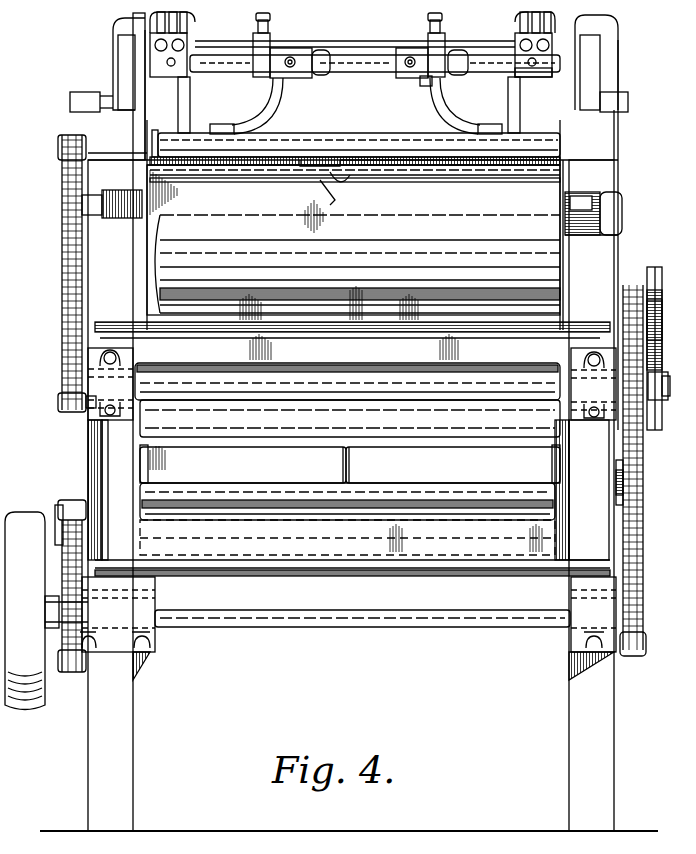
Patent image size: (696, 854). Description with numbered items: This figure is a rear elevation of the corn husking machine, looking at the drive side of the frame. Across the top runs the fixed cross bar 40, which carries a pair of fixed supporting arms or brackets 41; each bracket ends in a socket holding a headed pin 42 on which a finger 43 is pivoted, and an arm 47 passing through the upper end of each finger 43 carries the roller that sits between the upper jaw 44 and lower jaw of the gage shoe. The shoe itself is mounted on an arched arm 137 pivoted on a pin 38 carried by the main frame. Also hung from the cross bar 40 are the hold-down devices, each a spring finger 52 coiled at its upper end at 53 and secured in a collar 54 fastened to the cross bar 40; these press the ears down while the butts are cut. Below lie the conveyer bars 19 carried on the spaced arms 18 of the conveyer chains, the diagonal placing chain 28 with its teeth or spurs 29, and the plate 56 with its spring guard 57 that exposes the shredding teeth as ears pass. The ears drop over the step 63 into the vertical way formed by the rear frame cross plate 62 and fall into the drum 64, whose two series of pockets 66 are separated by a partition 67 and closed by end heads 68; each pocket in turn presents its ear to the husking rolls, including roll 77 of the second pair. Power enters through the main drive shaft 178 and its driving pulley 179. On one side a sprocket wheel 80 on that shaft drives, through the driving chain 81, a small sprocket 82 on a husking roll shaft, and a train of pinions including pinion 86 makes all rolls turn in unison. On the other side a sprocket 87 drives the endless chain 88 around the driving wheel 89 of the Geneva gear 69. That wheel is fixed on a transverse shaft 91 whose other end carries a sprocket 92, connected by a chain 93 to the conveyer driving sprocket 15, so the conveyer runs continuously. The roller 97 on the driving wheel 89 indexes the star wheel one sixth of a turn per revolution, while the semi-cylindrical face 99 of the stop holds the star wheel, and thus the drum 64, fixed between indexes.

The driving sprocket 15 is at (72, 136).
The spaced arms 18 is at (170, 166).
The cross rods or bars 19 is at (346, 145).
The diagonal placing chain 28 is at (300, 168).
The teeth or spurs 29 is at (420, 160).
The pin 38 is at (78, 88).
The fixed cross bar 40 is at (350, 55).
The fixed supporting arms or brackets 41 is at (322, 75).
The headed pin 42 is at (445, 78).
The finger 43 is at (262, 118).
The upper jaw 44 is at (622, 210).
The arm 47 is at (285, 48).
The spring finger 52 is at (190, 100).
The coil 53 is at (188, 14).
The collar 54 is at (518, 76).
The plate 56 is at (484, 172).
The spring guard 57 is at (230, 166).
The rear frame cross plate 62 is at (357, 263).
The step 63 is at (335, 200).
The drum or cylinder 64 is at (453, 465).
The pockets 66 is at (243, 465).
The partition 67 is at (345, 463).
The end heads 68 is at (156, 468).
The Geneva gear 69 is at (649, 258).
The husking roll 77 is at (398, 488).
The sprocket wheel 80 is at (70, 672).
The driving chain 81 is at (66, 504).
The small sprocket 82 is at (72, 500).
The pinion 86 is at (616, 484).
The sprocket 87 is at (633, 656).
The endless chain 88 is at (644, 571).
The driving wheel 89 is at (620, 390).
The transverse shaft 91 is at (330, 380).
The sprocket 92 is at (74, 406).
The chain 93 is at (62, 298).
The roller 97 is at (664, 375).
The semi-cylindrical face 99 is at (662, 340).
The arm 137 is at (123, 63).
The main drive shaft 178 is at (345, 628).
The driving pulley 179 is at (34, 712).